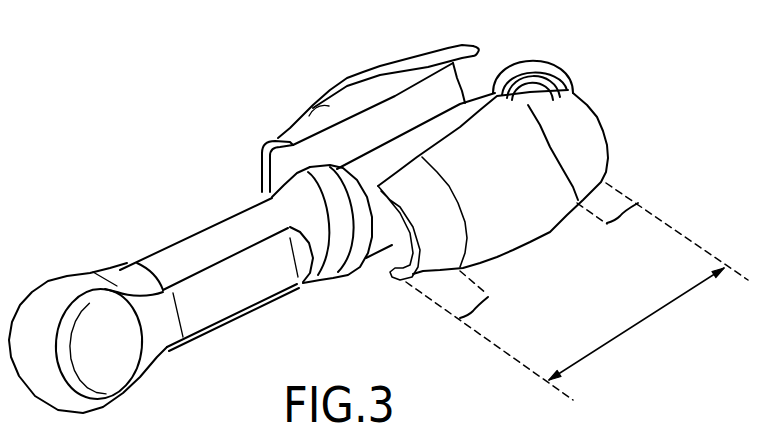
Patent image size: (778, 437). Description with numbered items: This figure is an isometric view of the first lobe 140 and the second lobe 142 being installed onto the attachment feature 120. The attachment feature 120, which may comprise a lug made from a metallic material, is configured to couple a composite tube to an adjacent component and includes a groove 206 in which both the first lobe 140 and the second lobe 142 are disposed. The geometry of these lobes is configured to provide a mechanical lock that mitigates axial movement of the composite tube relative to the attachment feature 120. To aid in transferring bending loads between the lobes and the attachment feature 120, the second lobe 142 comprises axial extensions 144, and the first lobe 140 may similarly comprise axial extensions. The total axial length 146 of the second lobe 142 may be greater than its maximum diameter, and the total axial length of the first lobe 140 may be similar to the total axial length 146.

The attachment feature 120 is at (192, 236).
The first lobe 140 is at (365, 75).
The second lobe 142 is at (583, 122).
The axial extensions 144 is at (476, 309).
The total axial length 146 is at (645, 318).
The groove 206 is at (502, 100).